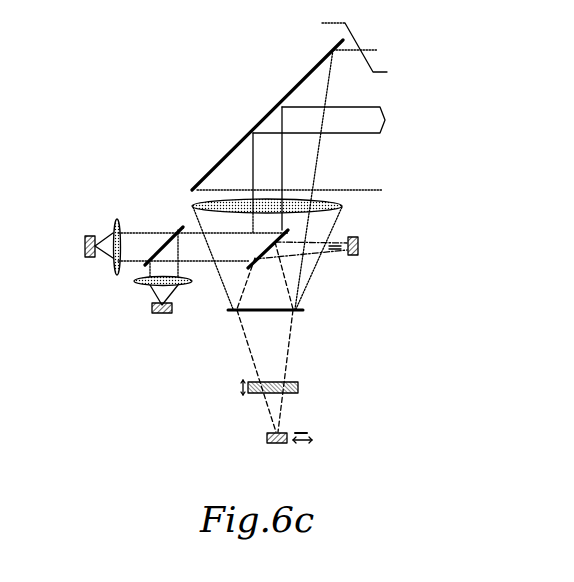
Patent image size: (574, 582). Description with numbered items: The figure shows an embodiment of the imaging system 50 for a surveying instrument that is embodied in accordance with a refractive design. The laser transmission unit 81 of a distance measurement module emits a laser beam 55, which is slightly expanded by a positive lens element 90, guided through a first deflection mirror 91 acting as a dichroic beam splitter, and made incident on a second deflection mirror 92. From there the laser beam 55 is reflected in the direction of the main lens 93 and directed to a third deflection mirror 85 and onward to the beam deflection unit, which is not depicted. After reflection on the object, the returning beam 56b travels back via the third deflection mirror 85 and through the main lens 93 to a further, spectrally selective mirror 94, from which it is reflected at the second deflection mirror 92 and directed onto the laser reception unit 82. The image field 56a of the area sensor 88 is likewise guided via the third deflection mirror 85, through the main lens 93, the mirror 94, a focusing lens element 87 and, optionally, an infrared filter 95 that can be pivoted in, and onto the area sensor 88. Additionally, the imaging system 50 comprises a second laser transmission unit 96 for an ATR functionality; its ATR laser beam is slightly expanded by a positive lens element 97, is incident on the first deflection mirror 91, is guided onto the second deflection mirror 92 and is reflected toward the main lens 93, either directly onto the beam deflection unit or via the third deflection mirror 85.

The imaging system 50 is at (202, 24).
The third deflection mirror 85 is at (265, 115).
The laser beam 55 is at (233, 208).
The image field 56a is at (302, 227).
The reflected beam 56b is at (295, 172).
The main lens 93 is at (310, 204).
The second deflection mirror 92 is at (329, 241).
The laser reception unit 82 is at (332, 265).
The spectrally selective mirror 94 is at (306, 342).
The focusing lens element 87 is at (300, 402).
The area sensor 88 is at (250, 455).
The infrared filter 95 is at (332, 446).
The laser transmission unit 81 is at (75, 241).
The positive lens element 90 is at (89, 227).
The first deflection mirror 91 is at (152, 228).
The positive lens element 97 is at (128, 308).
The second laser transmission unit 96 is at (137, 334).